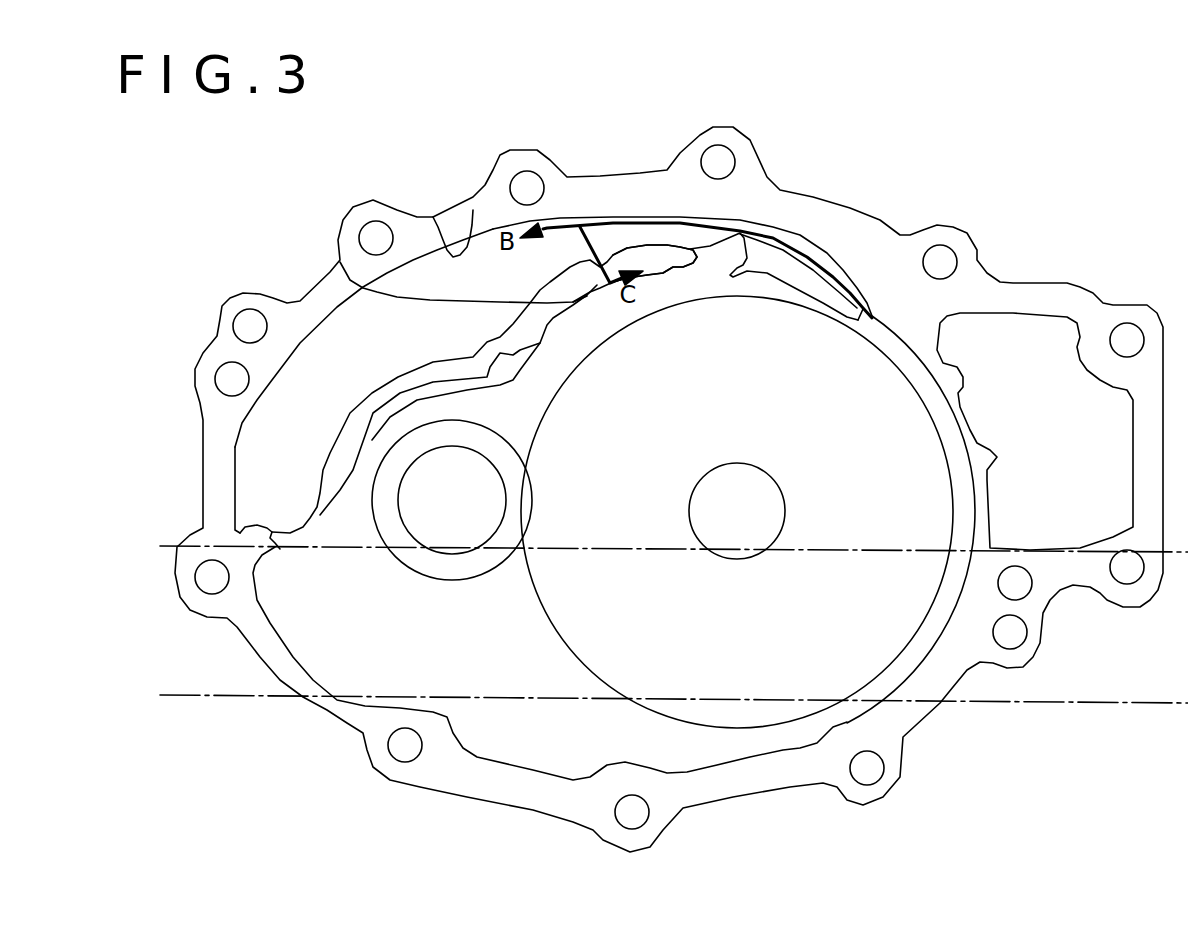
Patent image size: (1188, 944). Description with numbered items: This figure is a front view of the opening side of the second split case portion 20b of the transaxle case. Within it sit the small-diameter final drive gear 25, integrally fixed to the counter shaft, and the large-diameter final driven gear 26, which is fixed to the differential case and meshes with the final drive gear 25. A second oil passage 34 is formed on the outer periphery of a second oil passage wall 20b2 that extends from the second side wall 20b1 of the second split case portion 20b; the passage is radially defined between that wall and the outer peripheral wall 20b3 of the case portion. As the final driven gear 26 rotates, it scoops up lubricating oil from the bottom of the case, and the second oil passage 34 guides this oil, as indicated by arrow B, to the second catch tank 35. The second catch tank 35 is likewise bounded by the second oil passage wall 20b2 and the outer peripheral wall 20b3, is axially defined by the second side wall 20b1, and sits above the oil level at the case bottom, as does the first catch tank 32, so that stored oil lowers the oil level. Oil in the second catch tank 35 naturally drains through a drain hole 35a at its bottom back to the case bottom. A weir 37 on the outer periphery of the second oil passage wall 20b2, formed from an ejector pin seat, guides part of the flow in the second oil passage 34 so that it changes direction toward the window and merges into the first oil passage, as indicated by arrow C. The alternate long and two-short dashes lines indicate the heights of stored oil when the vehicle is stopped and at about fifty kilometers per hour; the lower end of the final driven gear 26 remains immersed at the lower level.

The second split case portion 20b is at (810, 182).
The second side wall 20b1 is at (517, 702).
The second oil passage wall 20b2 is at (668, 247).
The outer peripheral wall 20b3 is at (437, 247).
The final drive gear 25 is at (447, 570).
The final driven gear 26 is at (740, 672).
The first catch tank 32 is at (1025, 367).
The second oil passage 34 is at (610, 240).
The second catch tank 35 is at (305, 413).
The drain hole 35a is at (273, 547).
The weir 37 is at (340, 267).